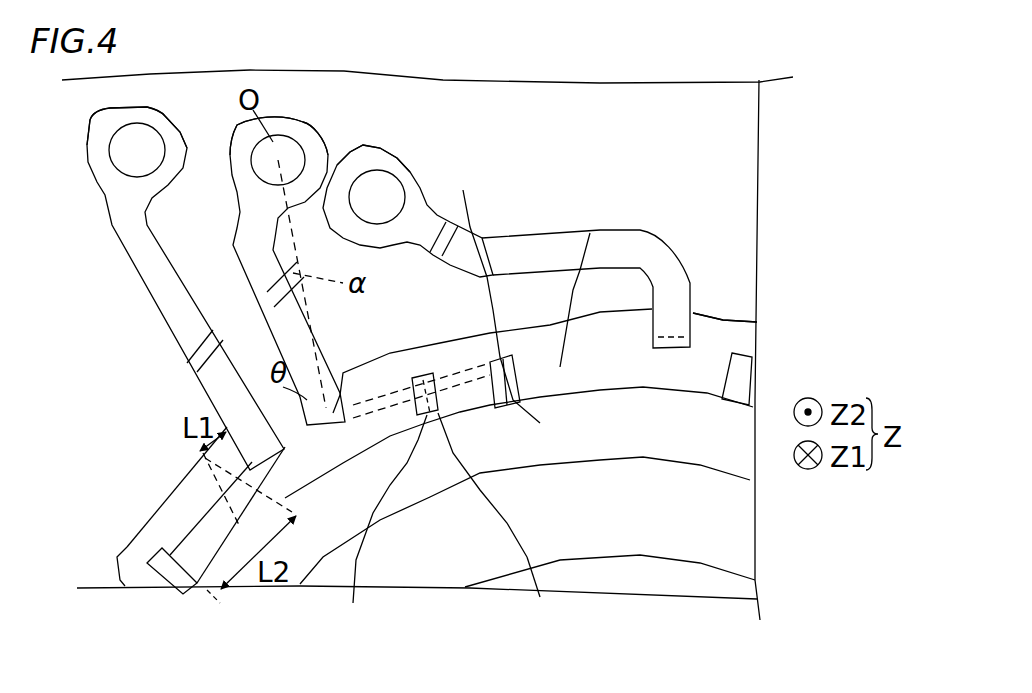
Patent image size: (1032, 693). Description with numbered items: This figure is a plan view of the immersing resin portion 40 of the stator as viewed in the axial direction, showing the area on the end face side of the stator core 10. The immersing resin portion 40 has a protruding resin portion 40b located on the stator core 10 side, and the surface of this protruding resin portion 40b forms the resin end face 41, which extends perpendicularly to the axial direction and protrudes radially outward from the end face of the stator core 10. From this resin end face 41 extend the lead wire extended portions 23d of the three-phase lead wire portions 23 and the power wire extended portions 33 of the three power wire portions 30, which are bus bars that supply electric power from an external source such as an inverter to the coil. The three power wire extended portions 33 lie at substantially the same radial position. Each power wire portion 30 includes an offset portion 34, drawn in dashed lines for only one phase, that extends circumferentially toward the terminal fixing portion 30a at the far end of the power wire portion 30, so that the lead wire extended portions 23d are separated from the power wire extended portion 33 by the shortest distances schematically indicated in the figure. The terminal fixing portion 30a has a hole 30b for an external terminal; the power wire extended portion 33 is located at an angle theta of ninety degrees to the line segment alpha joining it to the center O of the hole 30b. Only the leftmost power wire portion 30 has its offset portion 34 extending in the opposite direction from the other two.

The stator core 10 is at (435, 526).
The lead wire portion 23 is at (503, 540).
The lead wire extended portion 23d is at (505, 398).
The power wire portion 30 is at (378, 288).
The terminal fixing portion 30a is at (269, 133).
The hole 30b is at (257, 149).
The power wire extended portion 33 is at (568, 266).
The offset portion 34 is at (421, 357).
The immersing resin portion 40 is at (578, 121).
The protruding resin portion 40b is at (598, 242).
The resin end face 41 is at (740, 340).